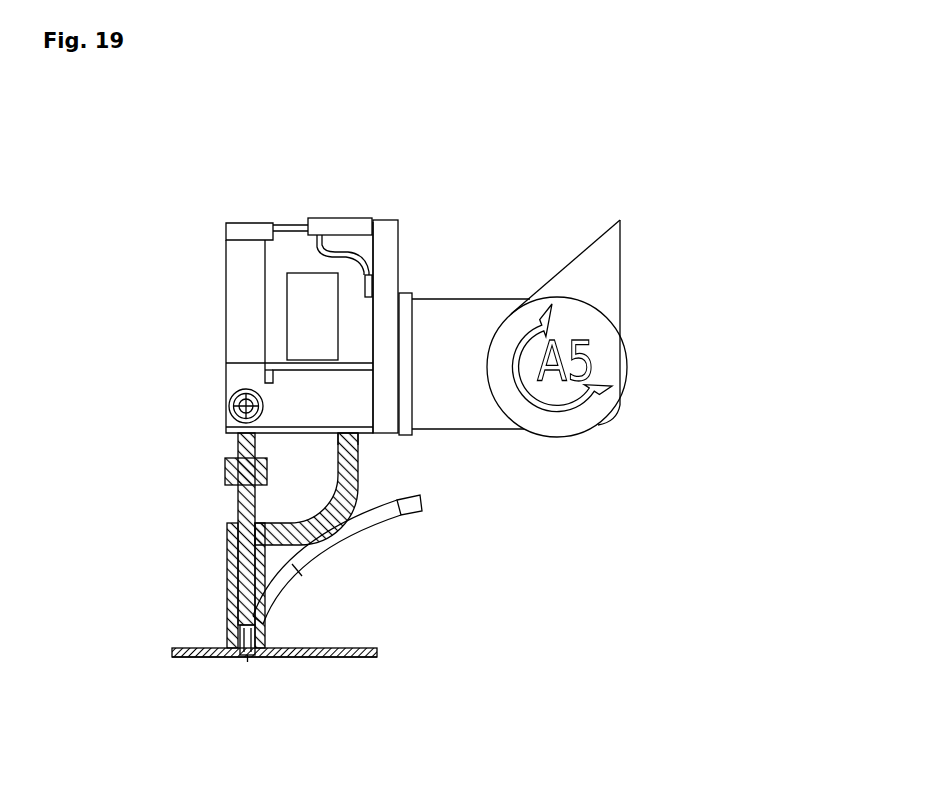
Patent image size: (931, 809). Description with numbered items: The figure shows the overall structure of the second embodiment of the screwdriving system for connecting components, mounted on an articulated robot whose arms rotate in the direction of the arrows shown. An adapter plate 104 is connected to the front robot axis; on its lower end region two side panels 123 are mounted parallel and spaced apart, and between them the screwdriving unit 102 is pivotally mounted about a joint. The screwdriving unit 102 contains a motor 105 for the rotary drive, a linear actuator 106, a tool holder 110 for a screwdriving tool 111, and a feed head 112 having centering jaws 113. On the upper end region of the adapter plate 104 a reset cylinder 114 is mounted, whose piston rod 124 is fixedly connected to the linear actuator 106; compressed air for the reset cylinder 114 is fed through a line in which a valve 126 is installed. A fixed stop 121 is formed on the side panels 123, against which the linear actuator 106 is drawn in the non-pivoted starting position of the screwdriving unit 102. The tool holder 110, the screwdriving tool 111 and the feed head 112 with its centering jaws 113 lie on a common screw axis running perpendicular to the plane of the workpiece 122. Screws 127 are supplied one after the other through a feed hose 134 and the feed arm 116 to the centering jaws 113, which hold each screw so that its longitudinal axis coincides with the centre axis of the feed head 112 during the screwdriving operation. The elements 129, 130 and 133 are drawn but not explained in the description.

The screwdriving unit 102 is at (192, 232).
The adapter plate 104 is at (400, 227).
The motor 105 is at (309, 271).
The linear actuator 106 is at (226, 288).
The tool holder 110 is at (227, 472).
The screwdriving tool 111 is at (227, 537).
The feed head 112 is at (227, 600).
The centering jaws 113 is at (240, 650).
The reset cylinder 114 is at (345, 222).
The feed arm 116 is at (297, 570).
The fixed stop 121 is at (265, 377).
The workpiece 122 is at (267, 655).
The side panels 123 is at (335, 430).
The piston rod 124 is at (307, 225).
The valve 126 is at (361, 268).
The screws 127 is at (293, 655).
The bearing 129 is at (231, 398).
The rotation shaft 130 is at (230, 412).
The curved pipe 133 is at (360, 452).
The feed hose 134 is at (385, 523).